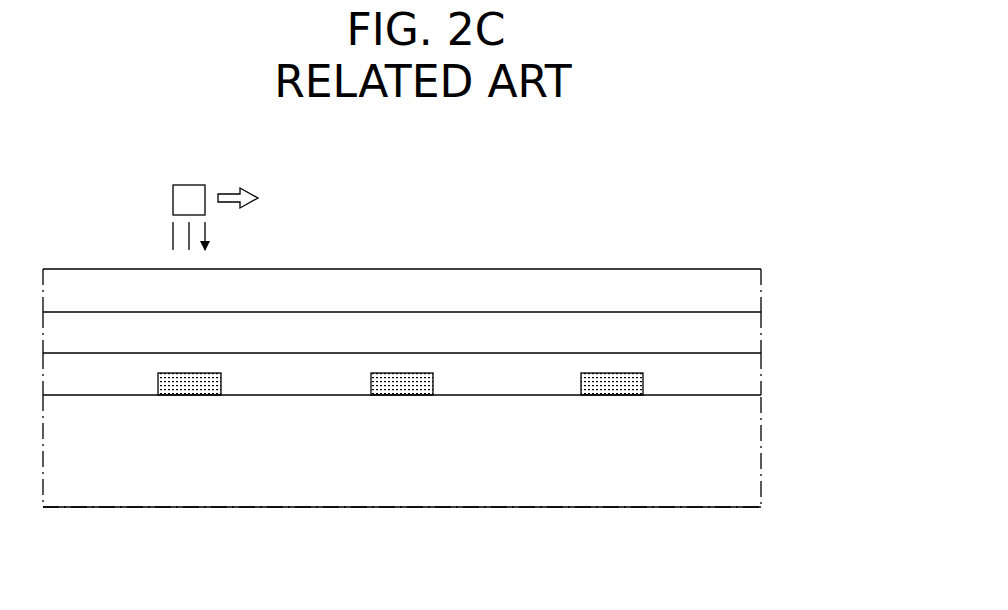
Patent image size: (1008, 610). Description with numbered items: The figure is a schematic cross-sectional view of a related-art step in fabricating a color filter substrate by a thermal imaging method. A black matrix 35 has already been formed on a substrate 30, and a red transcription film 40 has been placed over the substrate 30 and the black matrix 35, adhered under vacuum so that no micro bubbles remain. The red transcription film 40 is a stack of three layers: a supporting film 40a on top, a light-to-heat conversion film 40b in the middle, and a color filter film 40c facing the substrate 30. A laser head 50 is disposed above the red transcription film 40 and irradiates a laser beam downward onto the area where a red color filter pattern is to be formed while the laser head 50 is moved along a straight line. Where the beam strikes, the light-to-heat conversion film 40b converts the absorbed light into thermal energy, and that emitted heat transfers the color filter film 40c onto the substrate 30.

The substrate 30 is at (415, 462).
The black matrix 35 is at (617, 385).
The red transcription film 40 is at (481, 332).
The supporting film 40a is at (742, 288).
The light-to-heat conversion (LTHC) film 40b is at (742, 333).
The color filter film 40c is at (742, 373).
The laser head 50 is at (189, 190).